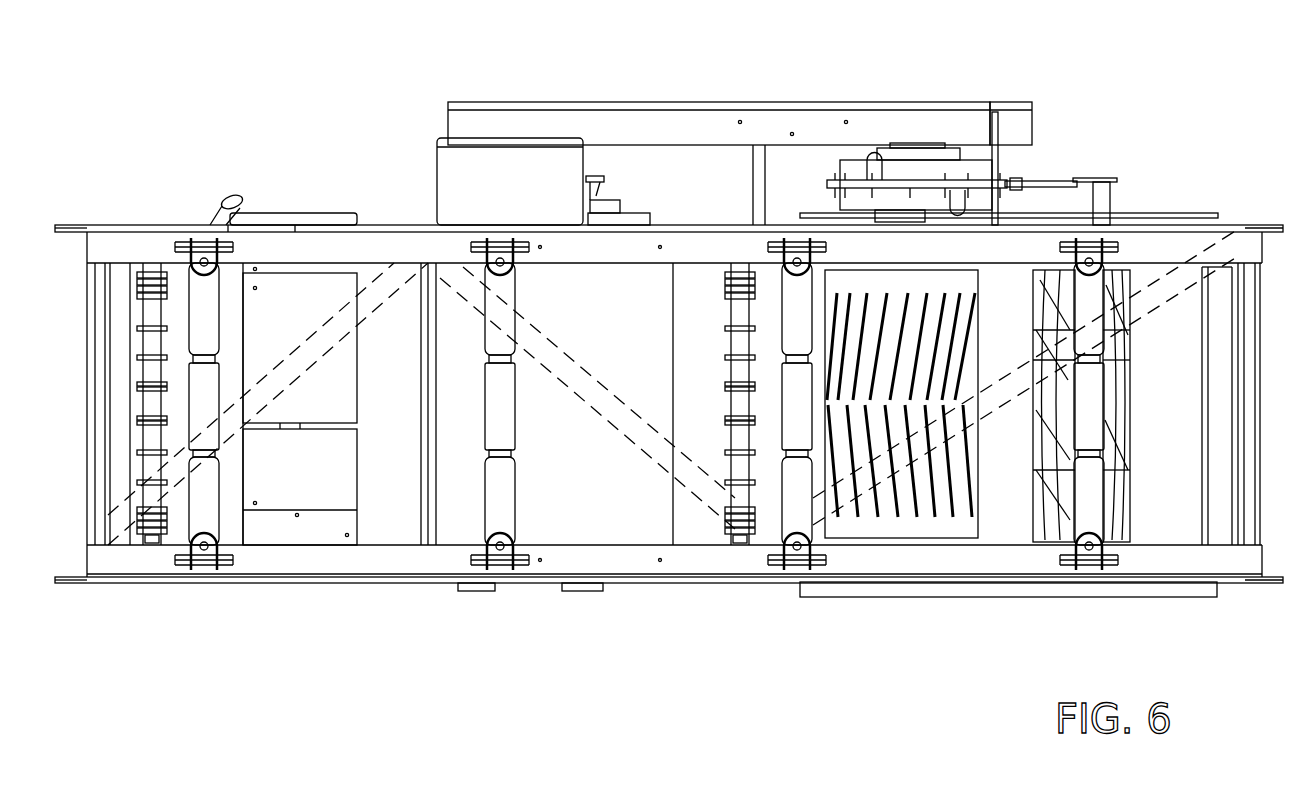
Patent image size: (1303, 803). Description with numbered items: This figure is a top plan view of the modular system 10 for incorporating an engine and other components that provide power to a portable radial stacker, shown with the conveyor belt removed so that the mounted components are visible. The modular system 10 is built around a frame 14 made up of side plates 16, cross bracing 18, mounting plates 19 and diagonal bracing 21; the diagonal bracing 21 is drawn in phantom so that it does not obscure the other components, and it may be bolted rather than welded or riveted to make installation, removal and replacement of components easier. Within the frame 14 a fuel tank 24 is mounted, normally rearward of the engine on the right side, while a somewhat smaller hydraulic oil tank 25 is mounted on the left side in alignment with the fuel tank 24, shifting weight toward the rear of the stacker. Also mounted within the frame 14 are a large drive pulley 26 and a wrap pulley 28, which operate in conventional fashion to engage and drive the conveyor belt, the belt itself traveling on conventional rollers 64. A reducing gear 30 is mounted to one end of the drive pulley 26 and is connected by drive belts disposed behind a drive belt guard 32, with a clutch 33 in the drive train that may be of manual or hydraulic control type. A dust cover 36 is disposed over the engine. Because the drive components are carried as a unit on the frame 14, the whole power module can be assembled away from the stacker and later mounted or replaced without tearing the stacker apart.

The modular system 10 is at (615, 596).
The frame 14 is at (728, 582).
The side plates 16 is at (389, 583).
The cross bracing 18 is at (95, 398).
The mounting plates 19 is at (126, 225).
The diagonal bracing 21 is at (298, 345).
The fuel tank 24 is at (333, 378).
The hydraulic oil tank 25 is at (296, 537).
The drive pulley 26 is at (912, 537).
The wrap pulley 28 is at (1035, 515).
The reducing gear 30 is at (1035, 170).
The drive belt guard 32 is at (748, 101).
The clutch 33 is at (608, 210).
The dust cover 36 is at (605, 462).
The rollers 64 is at (215, 385).